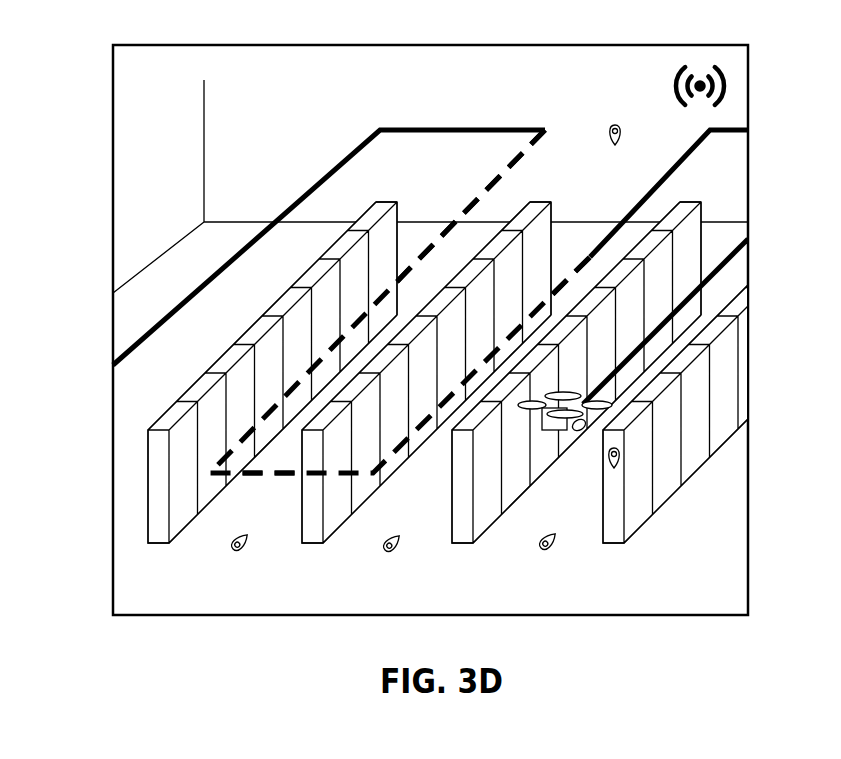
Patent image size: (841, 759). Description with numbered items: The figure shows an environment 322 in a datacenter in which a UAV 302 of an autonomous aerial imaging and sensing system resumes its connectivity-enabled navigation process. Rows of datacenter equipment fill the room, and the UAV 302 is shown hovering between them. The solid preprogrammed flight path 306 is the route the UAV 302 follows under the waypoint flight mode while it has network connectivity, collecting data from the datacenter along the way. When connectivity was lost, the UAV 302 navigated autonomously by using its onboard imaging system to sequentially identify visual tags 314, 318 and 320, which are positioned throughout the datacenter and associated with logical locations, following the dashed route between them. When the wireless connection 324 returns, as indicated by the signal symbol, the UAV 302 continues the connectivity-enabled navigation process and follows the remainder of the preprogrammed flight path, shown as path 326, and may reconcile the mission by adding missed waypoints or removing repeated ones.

The environment 322 is at (85, 77).
The preprogrammed flight path 306 is at (348, 150).
The path 326 is at (628, 212).
The visual tag 320 is at (612, 125).
The wireless connection 324 is at (676, 106).
The UAV 302 is at (578, 433).
The visual tag 314 is at (233, 549).
The visual tag 318 is at (393, 556).